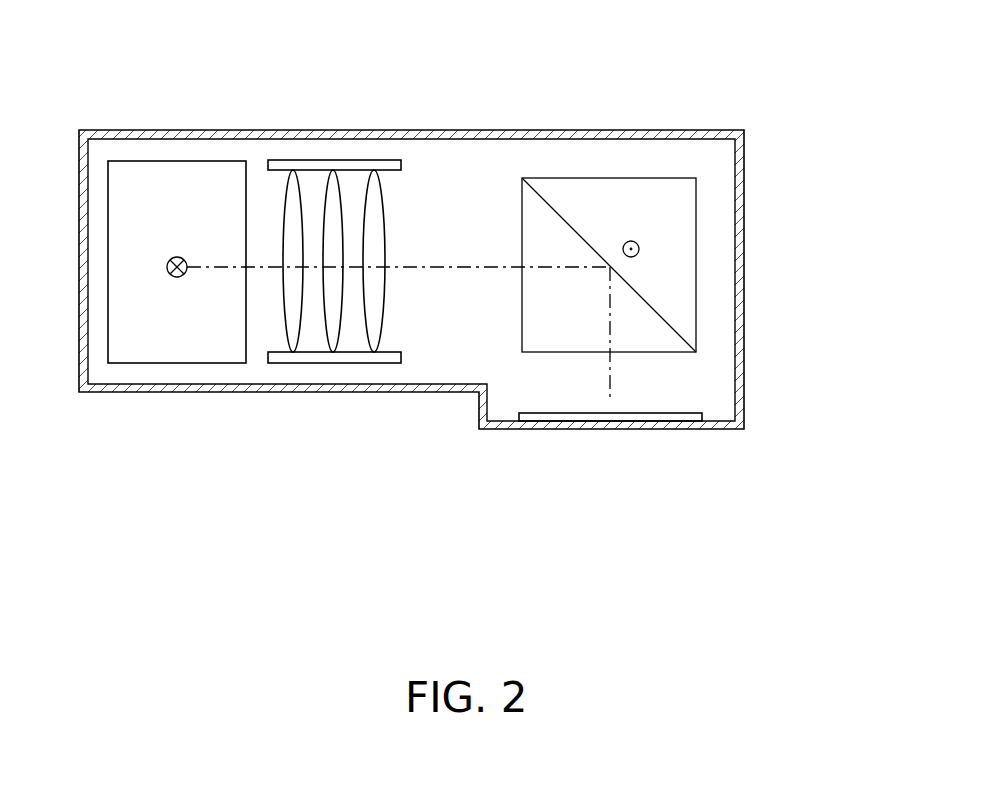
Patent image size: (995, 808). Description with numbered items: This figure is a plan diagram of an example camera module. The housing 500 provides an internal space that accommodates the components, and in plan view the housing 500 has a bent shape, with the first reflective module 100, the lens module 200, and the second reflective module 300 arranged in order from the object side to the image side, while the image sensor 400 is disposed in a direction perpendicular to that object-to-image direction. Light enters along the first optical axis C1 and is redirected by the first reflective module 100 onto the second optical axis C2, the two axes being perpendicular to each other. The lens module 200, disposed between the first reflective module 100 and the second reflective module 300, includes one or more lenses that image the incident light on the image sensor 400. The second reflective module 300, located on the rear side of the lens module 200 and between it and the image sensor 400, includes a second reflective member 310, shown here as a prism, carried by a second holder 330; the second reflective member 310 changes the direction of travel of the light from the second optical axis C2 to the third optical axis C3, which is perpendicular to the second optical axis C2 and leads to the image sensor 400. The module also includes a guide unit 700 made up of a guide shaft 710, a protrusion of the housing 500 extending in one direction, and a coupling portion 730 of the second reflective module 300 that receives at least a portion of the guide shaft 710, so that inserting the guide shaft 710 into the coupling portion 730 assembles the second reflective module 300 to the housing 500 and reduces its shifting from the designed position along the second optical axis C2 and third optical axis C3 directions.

The first reflective module 100 is at (168, 353).
The lens module 200 is at (300, 162).
The second reflective module 300 is at (607, 189).
The second reflective member 310 is at (537, 212).
The second holder 330 is at (638, 208).
The image sensor 400 is at (565, 424).
The housing 500 is at (168, 131).
The guide unit 700 is at (764, 240).
The guide shaft 710 is at (634, 246).
The coupling portion 730 is at (638, 252).
The first optical axis C1 is at (167, 268).
The second optical axis C2 is at (425, 266).
The third optical axis C3 is at (610, 400).